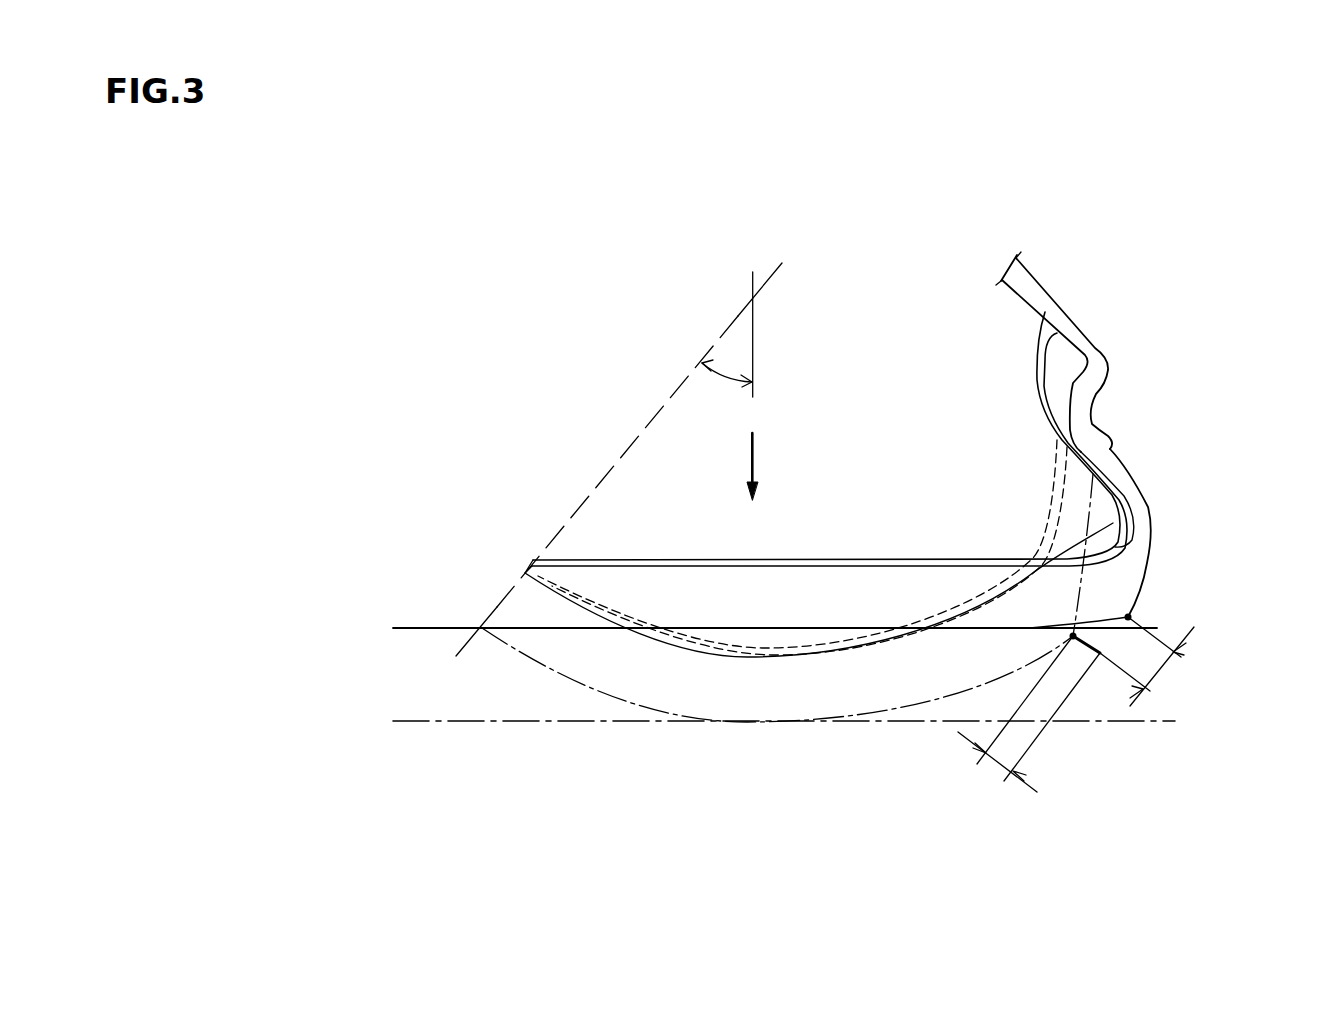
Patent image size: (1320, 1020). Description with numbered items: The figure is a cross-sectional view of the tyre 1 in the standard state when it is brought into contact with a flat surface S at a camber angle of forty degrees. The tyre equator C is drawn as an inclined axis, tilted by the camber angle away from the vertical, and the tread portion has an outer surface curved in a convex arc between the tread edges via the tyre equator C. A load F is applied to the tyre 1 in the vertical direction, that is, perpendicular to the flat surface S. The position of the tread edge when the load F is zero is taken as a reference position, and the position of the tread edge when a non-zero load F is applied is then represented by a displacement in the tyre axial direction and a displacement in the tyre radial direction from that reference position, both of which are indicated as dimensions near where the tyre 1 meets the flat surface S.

The tyre 1 is at (1104, 289).
The flat surface S is at (427, 628).
The tyre equator C is at (628, 452).
The load F is at (753, 467).